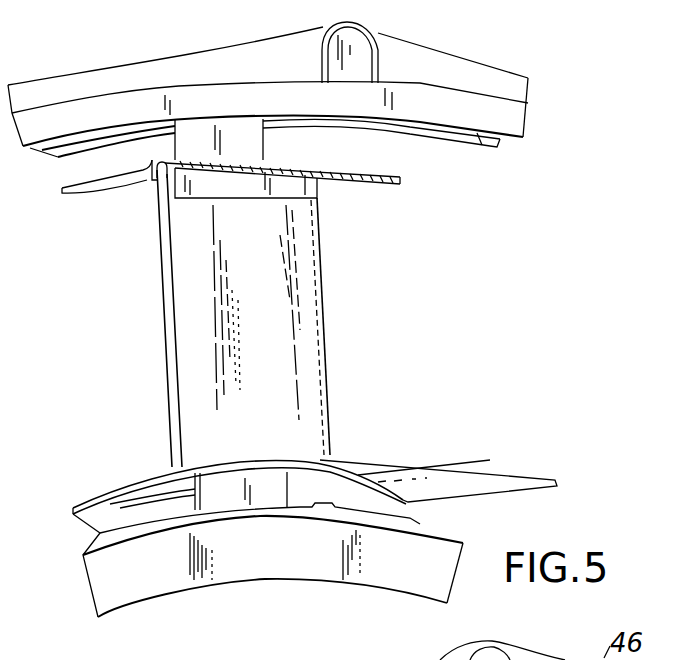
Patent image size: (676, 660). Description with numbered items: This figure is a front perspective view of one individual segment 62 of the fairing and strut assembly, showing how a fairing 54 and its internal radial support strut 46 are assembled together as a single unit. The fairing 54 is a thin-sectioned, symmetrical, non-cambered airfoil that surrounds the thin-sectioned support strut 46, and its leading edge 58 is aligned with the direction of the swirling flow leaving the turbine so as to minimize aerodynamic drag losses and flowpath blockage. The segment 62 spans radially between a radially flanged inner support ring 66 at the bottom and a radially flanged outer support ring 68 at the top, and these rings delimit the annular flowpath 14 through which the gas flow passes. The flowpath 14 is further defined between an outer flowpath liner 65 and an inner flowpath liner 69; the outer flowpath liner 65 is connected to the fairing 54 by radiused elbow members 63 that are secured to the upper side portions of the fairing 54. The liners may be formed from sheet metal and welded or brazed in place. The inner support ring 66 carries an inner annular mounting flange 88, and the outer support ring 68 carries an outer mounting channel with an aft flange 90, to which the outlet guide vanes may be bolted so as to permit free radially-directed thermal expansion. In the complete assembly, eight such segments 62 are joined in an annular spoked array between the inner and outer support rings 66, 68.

The aft flange 90 is at (482, 78).
The internal radial support strut 46 is at (157, 150).
The outer support ring 68 is at (477, 133).
The outer flowpath liner 65 is at (367, 180).
The radiused elbow member 63 is at (150, 178).
The fairing 54 is at (295, 278).
The leading edge 58 is at (170, 400).
The segment 62 is at (108, 338).
The annular flowpath 14 is at (396, 337).
The inner flowpath liner 69 is at (123, 488).
The inner support ring 66 is at (414, 521).
The inner annular mounting flange 88 is at (165, 585).